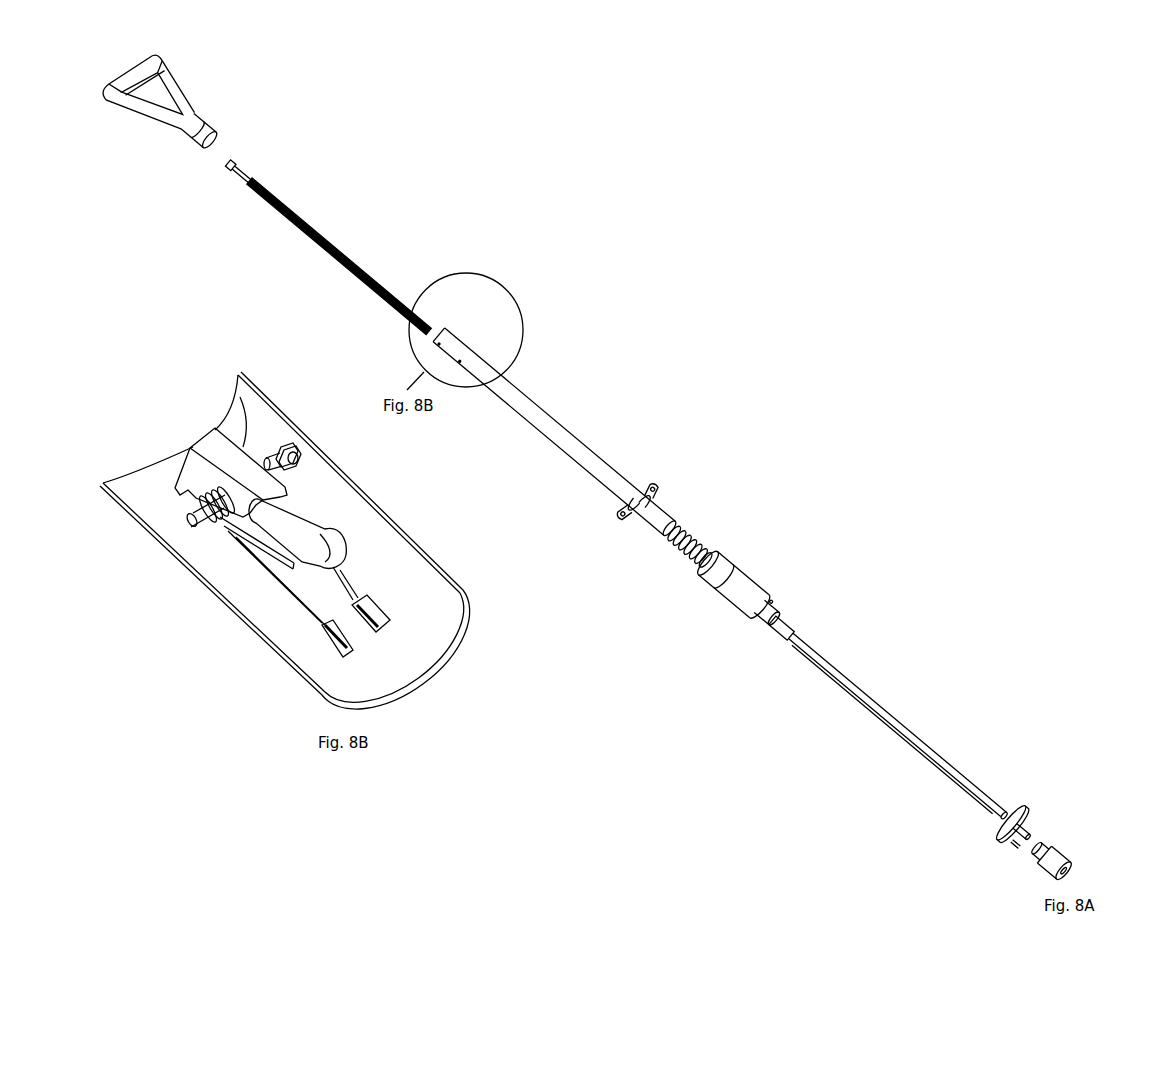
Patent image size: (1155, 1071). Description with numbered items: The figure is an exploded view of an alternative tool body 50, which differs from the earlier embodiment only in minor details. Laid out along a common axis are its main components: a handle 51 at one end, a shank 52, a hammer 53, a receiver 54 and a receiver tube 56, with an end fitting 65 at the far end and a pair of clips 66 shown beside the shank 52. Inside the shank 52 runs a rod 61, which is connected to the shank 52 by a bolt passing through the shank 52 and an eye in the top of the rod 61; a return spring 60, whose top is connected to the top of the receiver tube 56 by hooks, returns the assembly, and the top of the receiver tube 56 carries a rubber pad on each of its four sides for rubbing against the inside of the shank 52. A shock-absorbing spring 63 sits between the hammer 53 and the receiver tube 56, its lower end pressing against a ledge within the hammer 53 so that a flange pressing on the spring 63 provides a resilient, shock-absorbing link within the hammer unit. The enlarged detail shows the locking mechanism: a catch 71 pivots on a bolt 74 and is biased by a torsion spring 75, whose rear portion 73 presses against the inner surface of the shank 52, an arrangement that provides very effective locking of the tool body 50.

In FIG. 8A, the tool body 50 is at (797, 282).
In FIG. 8A, the handle 51 is at (180, 86).
In FIG. 8A, the shank 52 is at (520, 389).
In FIG. 8B, the shank 52 is at (435, 667).
In FIG. 8A, the hammer 53 is at (762, 585).
In FIG. 8A, the receiver 54 is at (1017, 812).
In FIG. 8A, the receiver tube 56 is at (863, 683).
In FIG. 8A, the return spring 60 is at (360, 264).
In FIG. 8A, the rod 61 is at (238, 165).
In FIG. 8A, the shock-absorbing spring 63 is at (699, 541).
In FIG. 8A, the end cap 65 is at (1062, 857).
In FIG. 8A, the clip 66 is at (658, 488).
In FIG. 8B, the catch 71 is at (240, 397).
In FIG. 8B, the rear portion 73 is at (352, 580).
In FIG. 8B, the bolt 74 is at (293, 452).
In FIG. 8B, the torsion spring 75 is at (232, 513).